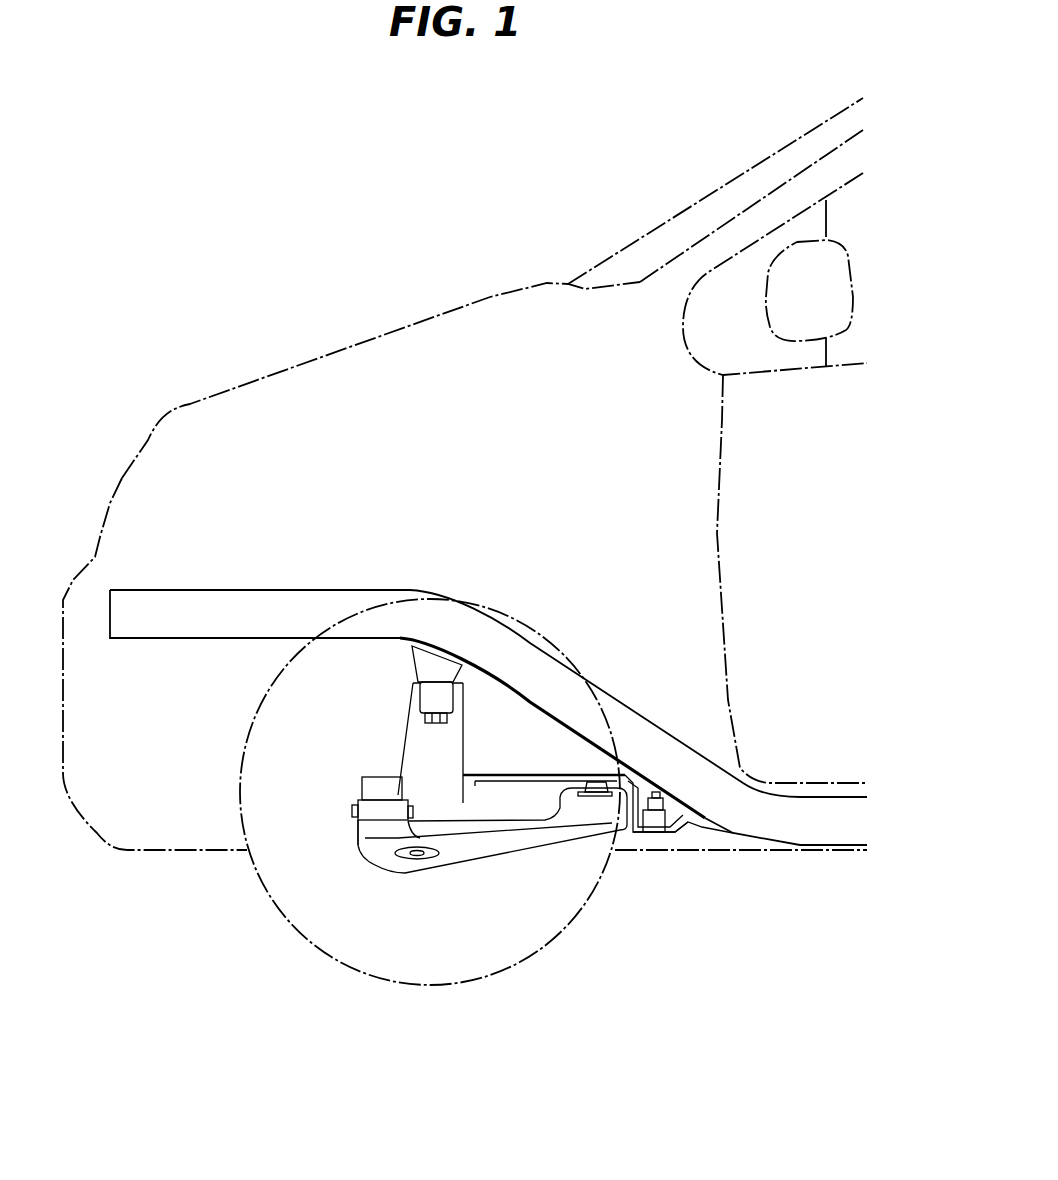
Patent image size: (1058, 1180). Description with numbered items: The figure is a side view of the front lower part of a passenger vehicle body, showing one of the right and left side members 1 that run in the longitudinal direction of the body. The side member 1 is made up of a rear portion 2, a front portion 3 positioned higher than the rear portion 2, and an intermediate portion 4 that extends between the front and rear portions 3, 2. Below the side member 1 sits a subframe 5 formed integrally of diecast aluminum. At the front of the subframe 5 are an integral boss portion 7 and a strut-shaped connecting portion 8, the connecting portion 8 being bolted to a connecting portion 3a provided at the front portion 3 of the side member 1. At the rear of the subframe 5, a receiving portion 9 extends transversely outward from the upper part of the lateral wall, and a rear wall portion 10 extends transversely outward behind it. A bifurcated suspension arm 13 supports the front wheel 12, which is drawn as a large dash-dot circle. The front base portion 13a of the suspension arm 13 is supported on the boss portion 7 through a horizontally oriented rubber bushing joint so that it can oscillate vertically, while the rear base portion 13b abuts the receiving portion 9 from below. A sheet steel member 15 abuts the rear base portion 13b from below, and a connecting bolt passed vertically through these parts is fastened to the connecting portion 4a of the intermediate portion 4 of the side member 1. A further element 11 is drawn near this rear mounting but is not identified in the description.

The side member 1 is at (488, 672).
The rear portion 2 is at (838, 833).
The front portion 3 is at (183, 632).
The connecting portion 3a is at (423, 658).
The intermediate portion 4 is at (633, 718).
The connecting portion 4a is at (590, 760).
The subframe 5 is at (495, 773).
The boss portion 7 is at (373, 792).
The strut-shaped connecting portion 8 is at (407, 743).
The receiving portion 9 is at (550, 773).
The rear wall portion 10 is at (645, 790).
The rear bracket 11 is at (655, 824).
The front wheel 12 is at (318, 955).
The suspension arm 13 is at (454, 869).
The front base portion 13a is at (378, 813).
The rear base portion 13b is at (595, 803).
The sheet steel member 15 is at (668, 838).